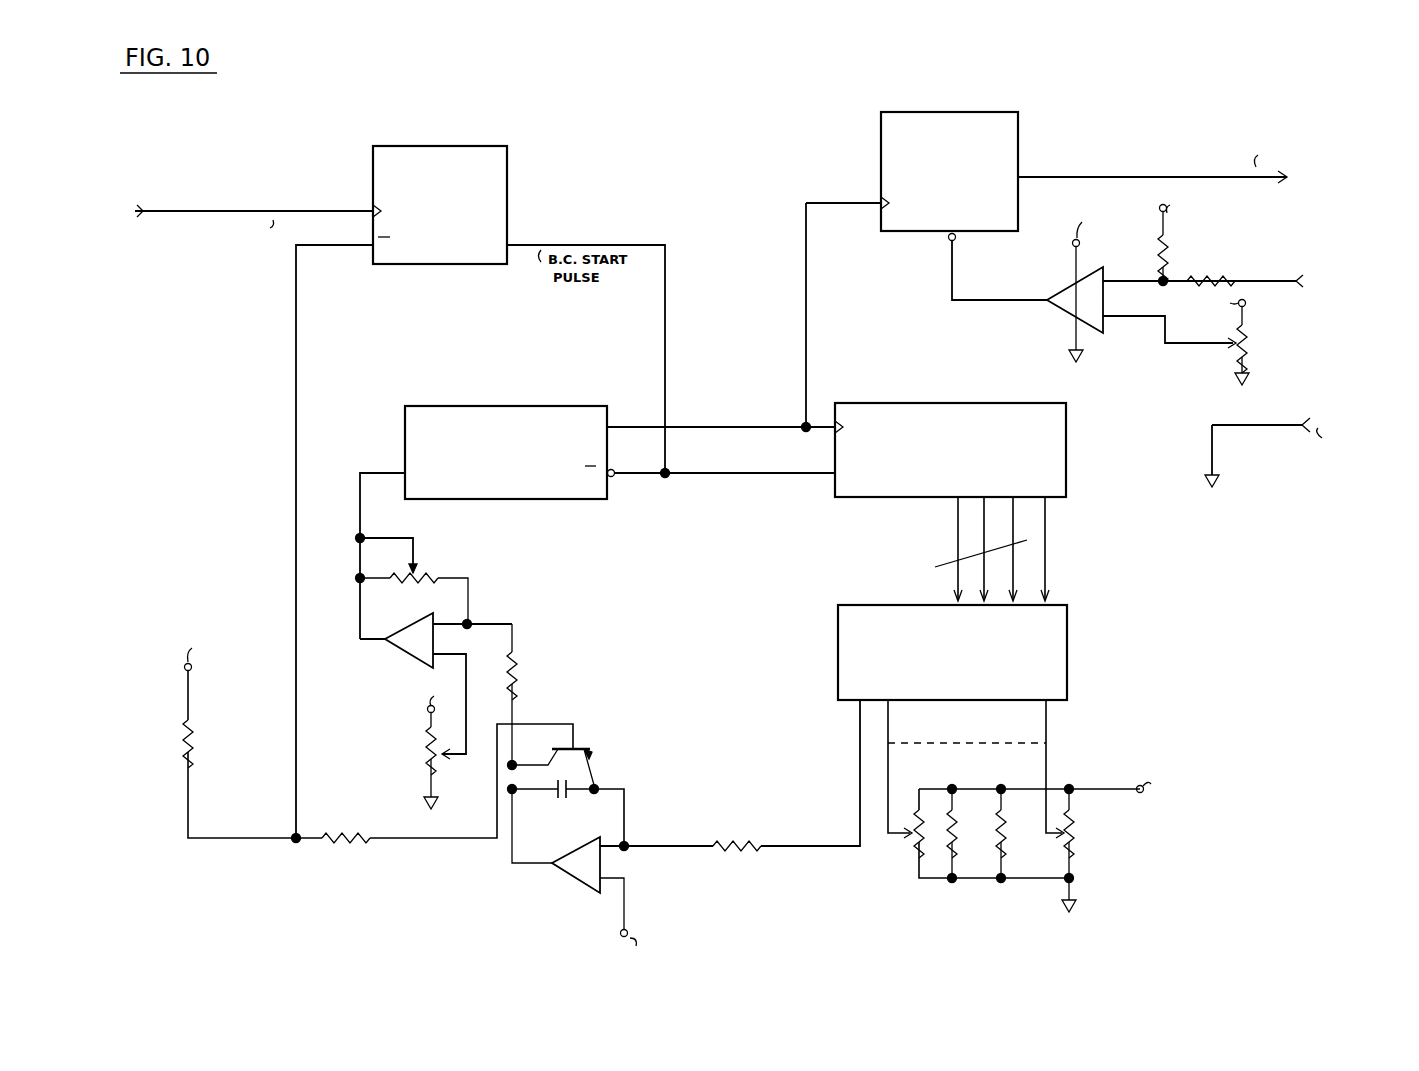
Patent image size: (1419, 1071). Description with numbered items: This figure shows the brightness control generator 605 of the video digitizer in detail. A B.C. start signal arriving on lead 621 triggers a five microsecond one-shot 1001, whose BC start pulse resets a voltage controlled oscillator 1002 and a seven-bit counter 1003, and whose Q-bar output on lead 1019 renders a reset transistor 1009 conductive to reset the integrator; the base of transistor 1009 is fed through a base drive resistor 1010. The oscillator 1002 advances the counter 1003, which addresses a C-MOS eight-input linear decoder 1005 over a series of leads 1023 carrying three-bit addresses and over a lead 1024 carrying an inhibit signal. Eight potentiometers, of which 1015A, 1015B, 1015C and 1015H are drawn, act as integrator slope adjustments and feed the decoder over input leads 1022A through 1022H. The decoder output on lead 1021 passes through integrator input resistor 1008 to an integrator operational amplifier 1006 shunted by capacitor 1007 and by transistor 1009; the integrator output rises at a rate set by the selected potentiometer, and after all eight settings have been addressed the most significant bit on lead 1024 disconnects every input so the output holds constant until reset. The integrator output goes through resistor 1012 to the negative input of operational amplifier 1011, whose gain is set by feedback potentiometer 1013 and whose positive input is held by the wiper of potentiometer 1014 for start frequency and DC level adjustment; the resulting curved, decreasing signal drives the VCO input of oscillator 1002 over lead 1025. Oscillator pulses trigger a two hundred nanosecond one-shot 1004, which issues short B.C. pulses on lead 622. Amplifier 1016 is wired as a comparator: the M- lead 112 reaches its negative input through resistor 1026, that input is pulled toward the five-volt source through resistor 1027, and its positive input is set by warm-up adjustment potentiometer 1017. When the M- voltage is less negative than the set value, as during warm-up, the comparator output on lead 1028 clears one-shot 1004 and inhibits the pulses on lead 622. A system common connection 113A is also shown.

The brightness control generator 605 is at (121, 156).
The B.C. start lead 621 is at (138, 211).
The one-shot 1001 is at (418, 148).
The lead 1019 is at (291, 363).
The one-shot 1004 is at (917, 114).
The lead 622 is at (1260, 179).
The lead 1028 is at (949, 270).
The comparator amplifier 1016 is at (1066, 294).
The M- lead 112 is at (1281, 281).
The resistor 1026 is at (1223, 278).
The resistor 1027 is at (1173, 257).
The potentiometer 1017 is at (1251, 339).
The voltage controlled oscillator 1002 is at (536, 407).
The lead 1025 is at (358, 483).
The feedback potentiometer 1013 is at (430, 576).
The operational amplifier 1011 is at (412, 650).
The potentiometer 1014 is at (422, 751).
The resistor 1012 is at (523, 673).
The base drive resistor 1010 is at (331, 844).
The reset transistor 1009 is at (578, 746).
The capacitor 1007 is at (549, 795).
The integrator operational amplifier 1006 is at (573, 884).
The integrator input resistor 1008 is at (715, 853).
The lead 1021 is at (870, 833).
The counter 1003 is at (961, 406).
The leads 1023 is at (1017, 522).
The lead 1024 is at (1050, 565).
The C-MOS 8-input linear decoder 1005 is at (870, 606).
The input lead 1022A is at (858, 728).
The input lead 1022H is at (1048, 774).
The potentiometer 1015A is at (918, 860).
The potentiometer 1015B is at (965, 869).
The potentiometer 1015C is at (1004, 850).
The potentiometer 1015H is at (1081, 848).
The system common lead 113A is at (1252, 429).